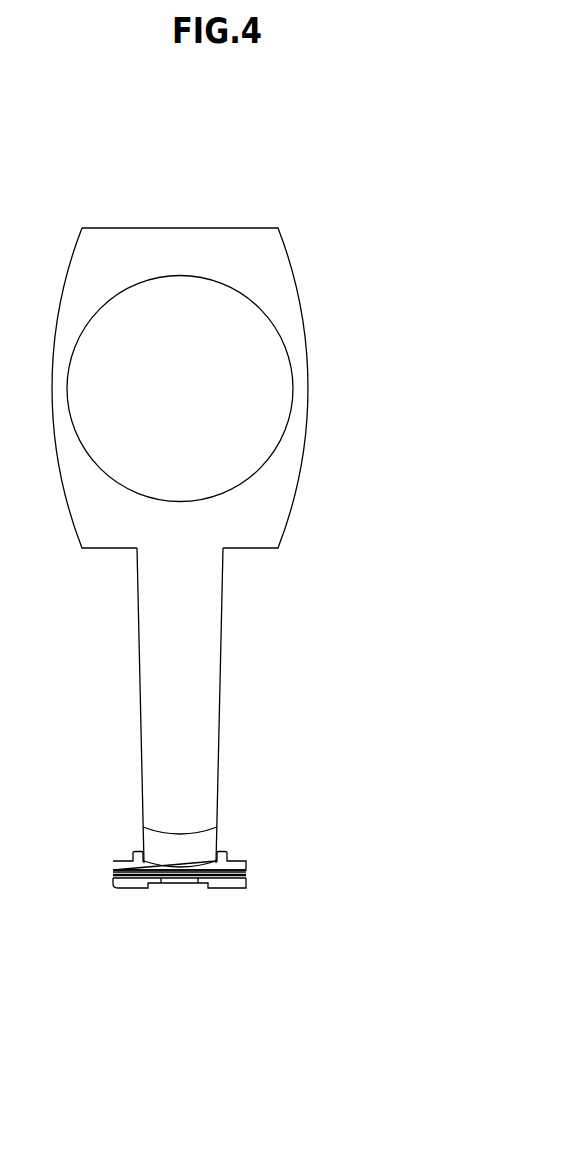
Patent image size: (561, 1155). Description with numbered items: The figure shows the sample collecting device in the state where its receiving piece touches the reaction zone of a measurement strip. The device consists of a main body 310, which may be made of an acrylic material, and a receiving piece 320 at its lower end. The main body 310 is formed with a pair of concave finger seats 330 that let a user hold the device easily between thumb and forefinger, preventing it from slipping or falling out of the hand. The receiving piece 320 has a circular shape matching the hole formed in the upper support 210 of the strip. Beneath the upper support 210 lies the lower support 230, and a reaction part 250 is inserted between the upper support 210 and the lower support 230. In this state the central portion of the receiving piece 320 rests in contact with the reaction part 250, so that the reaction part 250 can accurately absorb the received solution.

The upper support 210 is at (248, 863).
The lower support 230 is at (236, 887).
The reaction part 250 is at (248, 873).
The main body 310 is at (202, 677).
The receiving piece 320 is at (207, 840).
The finger seats 330 is at (243, 420).